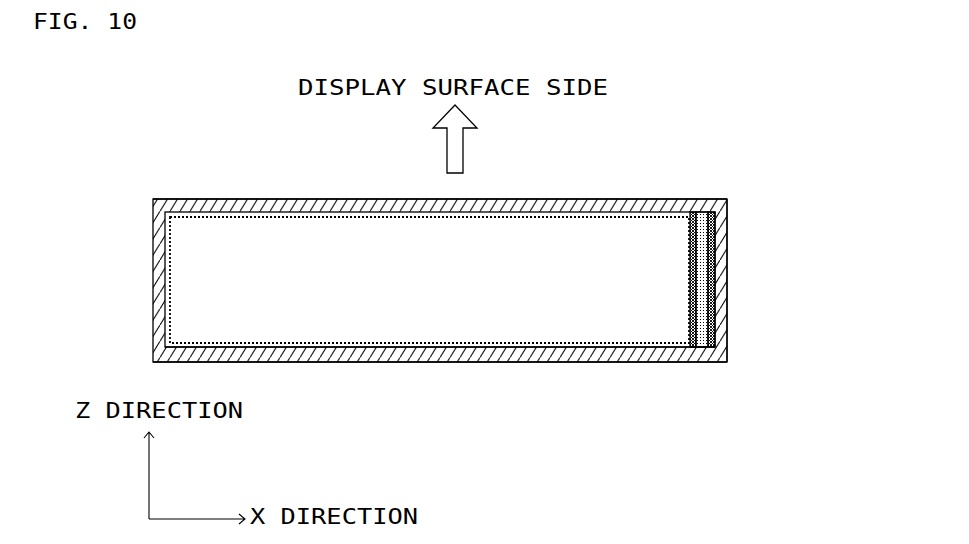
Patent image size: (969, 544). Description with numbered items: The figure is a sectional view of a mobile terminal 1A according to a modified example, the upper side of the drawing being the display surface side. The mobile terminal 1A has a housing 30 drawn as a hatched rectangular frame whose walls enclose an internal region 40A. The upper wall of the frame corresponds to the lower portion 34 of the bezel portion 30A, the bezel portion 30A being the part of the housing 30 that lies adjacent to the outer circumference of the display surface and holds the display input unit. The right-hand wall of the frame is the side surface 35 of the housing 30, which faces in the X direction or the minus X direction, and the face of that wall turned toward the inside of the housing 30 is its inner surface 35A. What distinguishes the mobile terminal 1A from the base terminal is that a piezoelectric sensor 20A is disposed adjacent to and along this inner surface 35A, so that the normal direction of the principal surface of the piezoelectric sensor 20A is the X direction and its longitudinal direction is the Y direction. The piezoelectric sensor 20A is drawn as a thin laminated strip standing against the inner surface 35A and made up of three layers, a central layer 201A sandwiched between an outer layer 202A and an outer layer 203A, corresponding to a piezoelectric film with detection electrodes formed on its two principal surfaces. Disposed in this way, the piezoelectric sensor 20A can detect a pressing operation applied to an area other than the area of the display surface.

The mobile terminal 1A is at (746, 130).
The housing 30 is at (238, 208).
The lower portion 34 is at (568, 199).
The side surface 35 is at (728, 322).
The bezel portion 30A is at (692, 364).
The inner surface 35A is at (699, 331).
The internal space of housing 40A is at (182, 293).
The piezoelectric sensor 20A is at (816, 235).
The display layer 201A is at (702, 272).
The first layer 202A is at (694, 263).
The second layer 203A is at (711, 280).